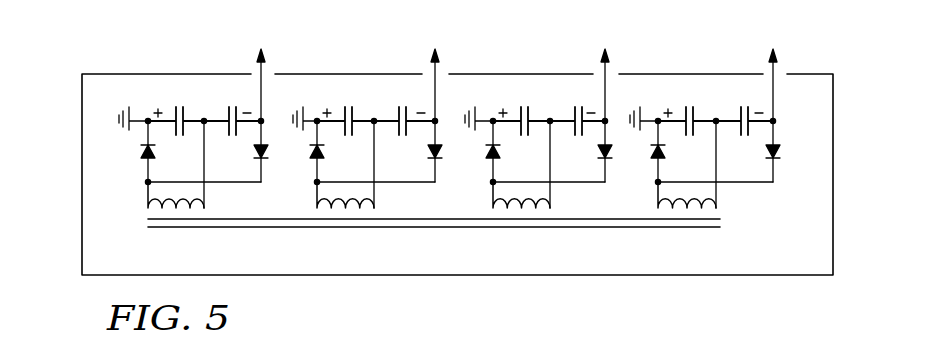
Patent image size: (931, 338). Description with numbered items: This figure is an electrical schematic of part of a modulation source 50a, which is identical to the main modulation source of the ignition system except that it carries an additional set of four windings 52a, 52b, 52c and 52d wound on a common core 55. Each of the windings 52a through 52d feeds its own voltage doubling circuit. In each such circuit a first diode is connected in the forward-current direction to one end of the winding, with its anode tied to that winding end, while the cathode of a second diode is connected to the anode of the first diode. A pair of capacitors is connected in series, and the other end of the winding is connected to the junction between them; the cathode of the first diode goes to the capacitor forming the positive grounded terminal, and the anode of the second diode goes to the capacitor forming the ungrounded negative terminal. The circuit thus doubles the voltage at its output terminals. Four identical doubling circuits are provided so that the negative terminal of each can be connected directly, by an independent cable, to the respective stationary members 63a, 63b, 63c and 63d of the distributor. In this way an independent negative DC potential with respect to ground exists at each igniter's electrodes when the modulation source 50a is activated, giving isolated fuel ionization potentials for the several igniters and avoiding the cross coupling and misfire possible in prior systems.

The modulation source 50a is at (651, 280).
The winding 52a is at (148, 200).
The winding 52b is at (317, 200).
The winding 52c is at (493, 200).
The winding 52d is at (658, 200).
The core 55 is at (483, 228).
The stationary member 63a is at (260, 70).
The stationary member 63b is at (434, 70).
The stationary member 63c is at (605, 70).
The stationary member 63d is at (774, 70).